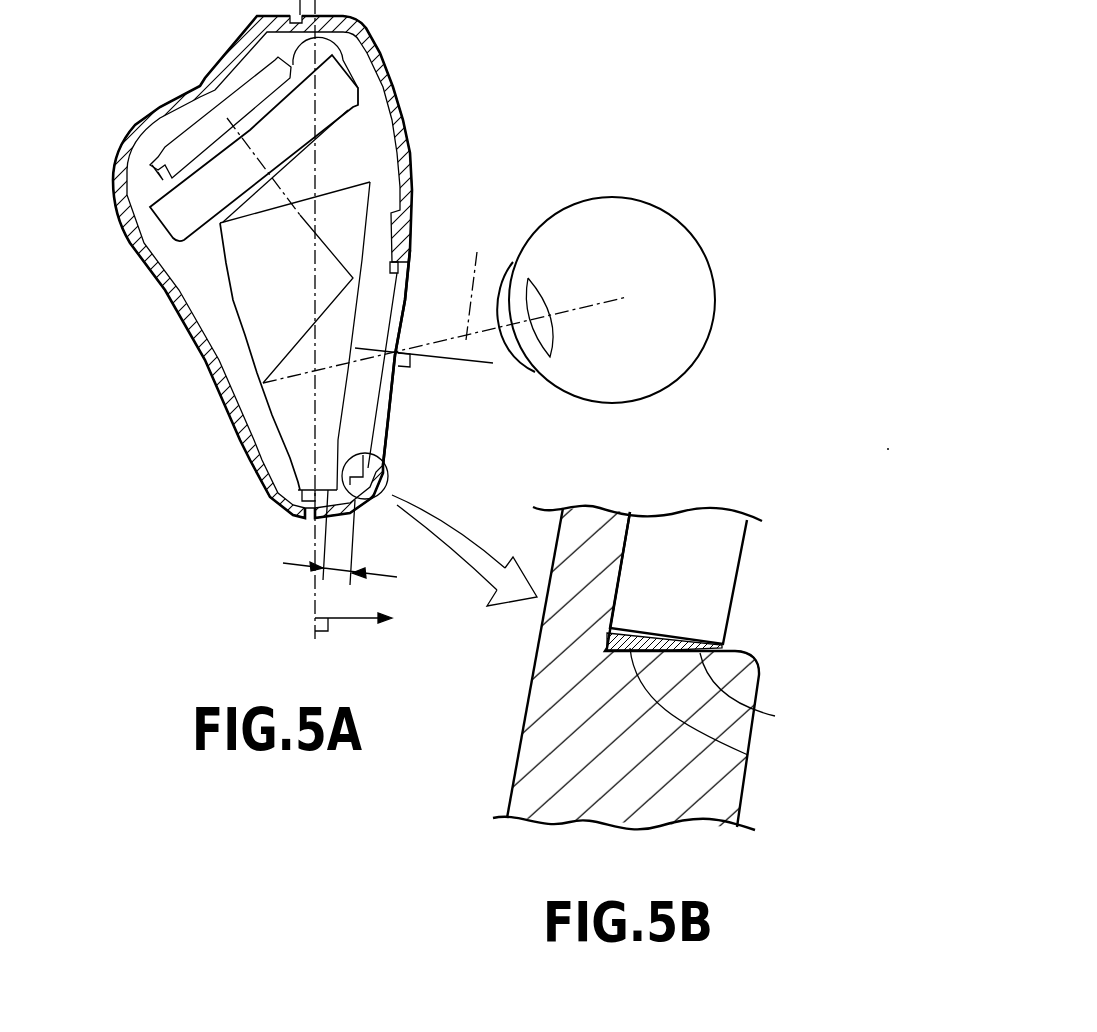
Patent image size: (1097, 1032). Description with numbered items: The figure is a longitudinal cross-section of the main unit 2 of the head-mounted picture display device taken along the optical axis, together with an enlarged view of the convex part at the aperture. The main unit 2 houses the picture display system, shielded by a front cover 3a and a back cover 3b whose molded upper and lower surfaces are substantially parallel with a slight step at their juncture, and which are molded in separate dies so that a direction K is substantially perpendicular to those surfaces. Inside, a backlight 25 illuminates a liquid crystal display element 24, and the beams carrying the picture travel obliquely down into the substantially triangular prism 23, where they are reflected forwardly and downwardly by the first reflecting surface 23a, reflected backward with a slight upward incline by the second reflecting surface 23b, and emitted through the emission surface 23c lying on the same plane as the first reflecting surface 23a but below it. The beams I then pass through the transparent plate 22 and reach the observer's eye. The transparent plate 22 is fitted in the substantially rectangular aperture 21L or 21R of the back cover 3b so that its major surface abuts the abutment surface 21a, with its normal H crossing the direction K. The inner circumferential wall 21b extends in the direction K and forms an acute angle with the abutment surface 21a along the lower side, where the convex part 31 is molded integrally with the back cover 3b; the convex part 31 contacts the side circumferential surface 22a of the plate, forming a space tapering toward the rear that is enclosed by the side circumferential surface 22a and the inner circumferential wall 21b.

In FIG. 5A, the main unit 2 is at (250, 259).
In FIG. 5A, the front cover 3a is at (228, 58).
In FIG. 5A, the back cover 3b is at (360, 40).
In FIG. 5A, the aperture 21L is at (490, 312).
In FIG. 5B, the aperture 21L is at (697, 668).
In FIG. 5A, the aperture 21R is at (393, 253).
In FIG. 5B, the aperture 21R is at (750, 712).
In FIG. 5B, the abutment surface 21a is at (619, 540).
In FIG. 5B, the inner circumferential wall 21b is at (748, 672).
In FIG. 5A, the transparent plate 22 is at (401, 311).
In FIG. 5B, the transparent plate 22 is at (727, 555).
In FIG. 5B, the side circumferential surface 22a is at (680, 633).
In FIG. 5A, the prism 23 is at (319, 328).
In FIG. 5A, the first reflecting surface 23a is at (376, 210).
In FIG. 5A, the second reflecting surface 23b is at (278, 424).
In FIG. 5A, the emission surface 23c is at (312, 456).
In FIG. 5A, the liquid crystal display element 24 is at (173, 220).
In FIG. 5A, the backlight 25 is at (173, 153).
In FIG. 5B, the convex part 31 is at (733, 750).
In FIG. 5A, the normal H is at (460, 363).
In FIG. 5A, the beam I is at (474, 281).
In FIG. 5A, the direction K is at (358, 622).